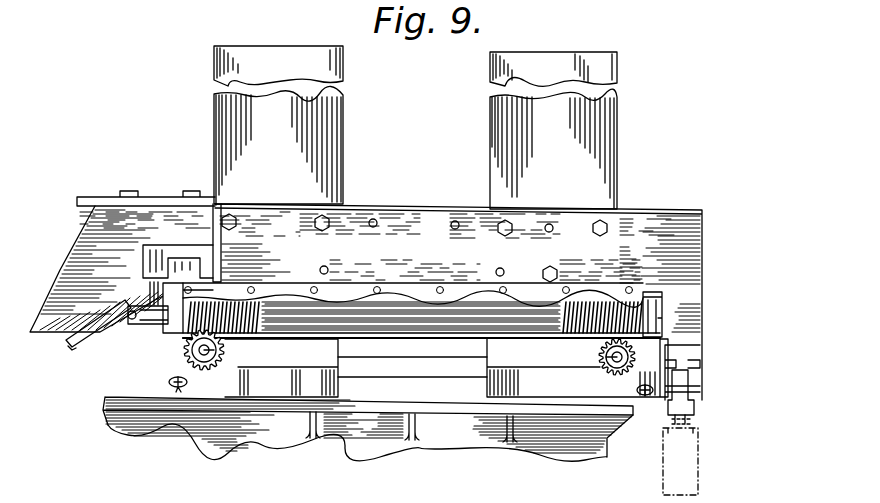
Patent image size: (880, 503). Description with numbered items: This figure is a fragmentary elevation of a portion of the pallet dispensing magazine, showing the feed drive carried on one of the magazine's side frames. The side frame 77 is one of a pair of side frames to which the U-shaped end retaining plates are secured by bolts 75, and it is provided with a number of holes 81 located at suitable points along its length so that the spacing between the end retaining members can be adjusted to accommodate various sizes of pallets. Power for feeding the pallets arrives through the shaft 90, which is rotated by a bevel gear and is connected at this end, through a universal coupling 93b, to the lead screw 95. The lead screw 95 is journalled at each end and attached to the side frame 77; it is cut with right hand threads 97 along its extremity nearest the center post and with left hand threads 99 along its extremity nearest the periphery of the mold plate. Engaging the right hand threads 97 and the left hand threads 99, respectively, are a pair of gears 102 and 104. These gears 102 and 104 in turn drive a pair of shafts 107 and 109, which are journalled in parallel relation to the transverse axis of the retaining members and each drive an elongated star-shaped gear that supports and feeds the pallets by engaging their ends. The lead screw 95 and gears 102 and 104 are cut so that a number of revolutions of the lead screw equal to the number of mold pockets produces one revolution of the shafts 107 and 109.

The bolts 75 is at (227, 211).
The side frame 77 is at (420, 226).
The holes 81 is at (457, 221).
The shaft 90 is at (88, 346).
The universal coupling 93b is at (133, 328).
The lead screw 95 is at (342, 316).
The right hand threads 97 is at (184, 350).
The left hand threads 99 is at (652, 307).
The gear 102 is at (602, 370).
The gear 104 is at (183, 359).
The shaft 107 is at (600, 357).
The shaft 109 is at (224, 352).